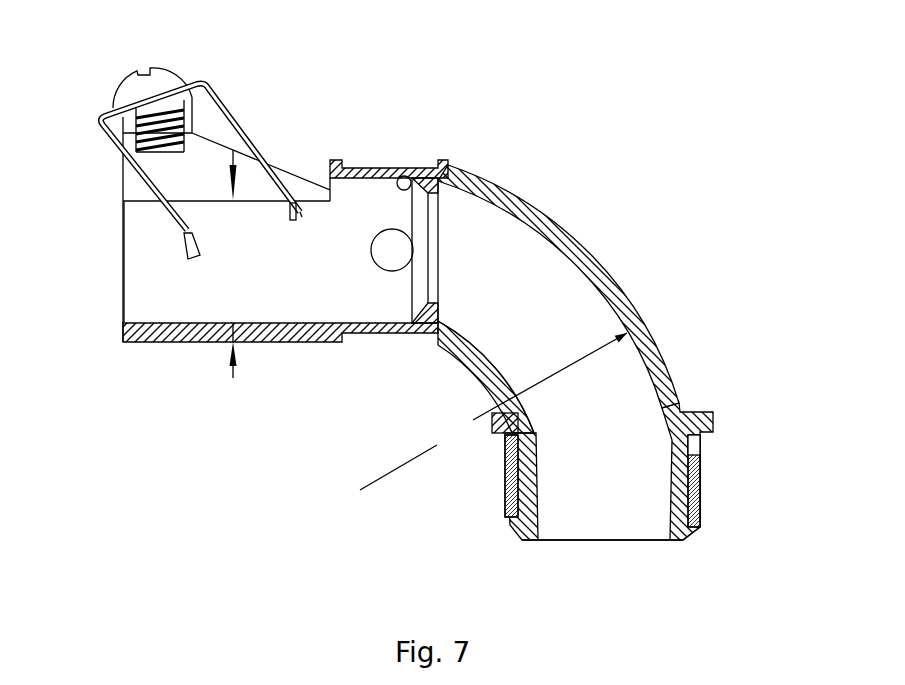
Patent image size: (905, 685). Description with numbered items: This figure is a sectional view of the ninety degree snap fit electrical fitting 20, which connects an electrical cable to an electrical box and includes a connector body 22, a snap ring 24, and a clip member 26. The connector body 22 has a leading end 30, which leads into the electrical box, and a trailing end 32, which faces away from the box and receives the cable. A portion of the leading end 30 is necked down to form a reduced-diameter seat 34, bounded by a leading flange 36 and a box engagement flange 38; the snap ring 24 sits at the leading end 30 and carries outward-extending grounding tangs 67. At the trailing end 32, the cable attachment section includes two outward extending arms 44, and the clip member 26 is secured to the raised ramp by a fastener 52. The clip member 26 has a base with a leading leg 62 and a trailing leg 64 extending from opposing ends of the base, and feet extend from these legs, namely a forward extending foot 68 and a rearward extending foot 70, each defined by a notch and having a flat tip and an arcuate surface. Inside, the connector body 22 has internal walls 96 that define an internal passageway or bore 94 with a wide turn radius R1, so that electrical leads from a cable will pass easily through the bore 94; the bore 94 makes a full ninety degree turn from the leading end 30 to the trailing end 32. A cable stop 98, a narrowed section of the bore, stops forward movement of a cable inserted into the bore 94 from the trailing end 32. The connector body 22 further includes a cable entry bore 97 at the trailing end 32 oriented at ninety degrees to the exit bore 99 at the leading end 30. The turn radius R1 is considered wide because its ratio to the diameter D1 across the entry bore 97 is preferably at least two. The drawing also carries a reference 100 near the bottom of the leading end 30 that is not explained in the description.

The ninety degree snap fit electrical fitting 20 is at (600, 128).
The connector body 22 is at (593, 255).
The snap ring 24 is at (700, 503).
The clip member 26 is at (195, 83).
The leading end 30 is at (600, 542).
The trailing end 32 is at (123, 258).
The reduced-diameter seat 34 is at (533, 458).
The leading flange 36 is at (524, 530).
The box engagement flange 38 is at (716, 420).
The outward extending arms 44 is at (186, 182).
The fastener 52 is at (122, 78).
The leading leg 62 is at (227, 108).
The trailing leg 64 is at (140, 181).
The grounding tangs 67 is at (703, 452).
The forward extending foot 68 is at (306, 211).
The rearward extending foot 70 is at (292, 223).
The internal passageway or bore 94 is at (587, 417).
The internal walls 96 is at (606, 289).
The cable entry bore 97 is at (138, 268).
The cable stop 98 is at (402, 177).
The exit bore 99 is at (608, 520).
The chamfered edge 100 is at (691, 531).
The diameter across entry bore D1 is at (233, 365).
The wide turn radius R1 is at (493, 411).